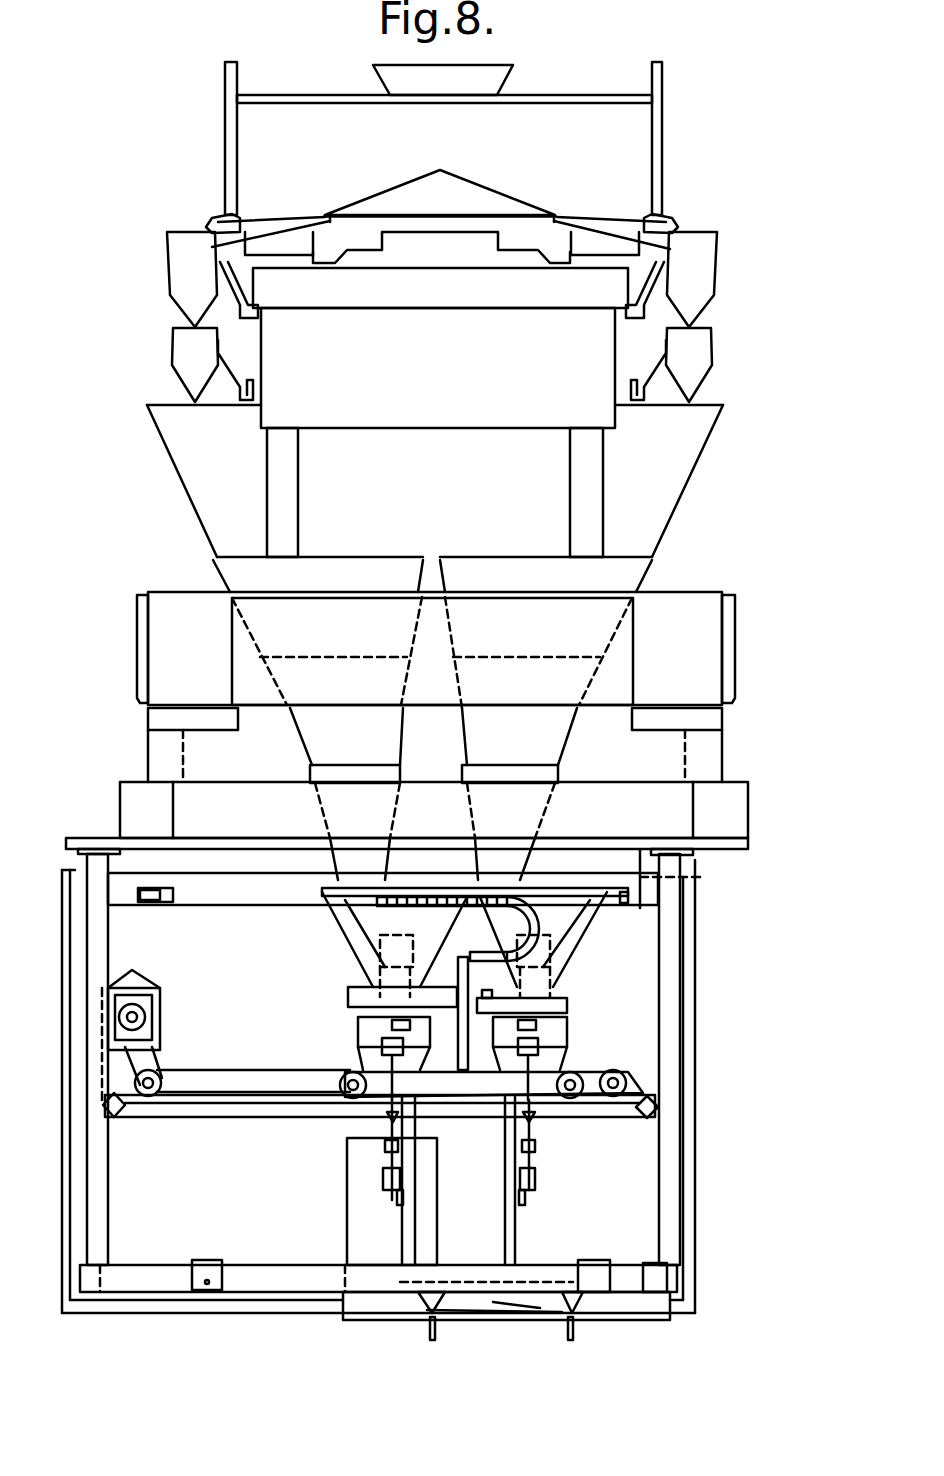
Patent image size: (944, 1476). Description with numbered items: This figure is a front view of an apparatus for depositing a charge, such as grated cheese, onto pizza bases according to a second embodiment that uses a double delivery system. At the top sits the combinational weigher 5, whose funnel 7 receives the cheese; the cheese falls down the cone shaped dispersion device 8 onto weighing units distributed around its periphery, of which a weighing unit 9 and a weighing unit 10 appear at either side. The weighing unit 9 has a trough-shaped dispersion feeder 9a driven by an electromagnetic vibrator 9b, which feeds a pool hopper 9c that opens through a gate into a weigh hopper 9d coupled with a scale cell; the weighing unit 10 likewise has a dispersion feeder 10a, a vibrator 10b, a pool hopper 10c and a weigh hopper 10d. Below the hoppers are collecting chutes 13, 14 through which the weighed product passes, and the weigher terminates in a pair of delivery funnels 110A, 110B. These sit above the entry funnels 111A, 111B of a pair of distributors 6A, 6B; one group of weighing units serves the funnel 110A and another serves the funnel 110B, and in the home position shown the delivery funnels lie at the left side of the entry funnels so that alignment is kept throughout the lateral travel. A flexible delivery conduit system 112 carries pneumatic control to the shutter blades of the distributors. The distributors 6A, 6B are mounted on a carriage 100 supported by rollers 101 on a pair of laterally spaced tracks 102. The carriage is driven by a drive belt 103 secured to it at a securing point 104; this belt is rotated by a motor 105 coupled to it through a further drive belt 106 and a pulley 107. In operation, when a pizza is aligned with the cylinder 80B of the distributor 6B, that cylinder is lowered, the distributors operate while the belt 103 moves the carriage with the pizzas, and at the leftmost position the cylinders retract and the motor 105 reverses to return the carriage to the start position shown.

The combinational weigher 5 is at (712, 139).
The funnel 7 is at (505, 90).
The cone shaped dispersion device 8 is at (482, 197).
The weighing unit 9 is at (207, 171).
The trough-shaped dispersion feeder 9a is at (222, 221).
The electromagnetic vibrator 9b is at (300, 247).
The pool hopper 9c is at (178, 272).
The weigh hopper 9d is at (185, 352).
The weighing unit 10 is at (735, 207).
The trough-shaped dispersion feeder 10a is at (675, 212).
The electromagnetic vibrator 10b is at (585, 247).
The pool hopper 10c is at (700, 272).
The weigh hopper 10d is at (695, 352).
The left collecting chute 13 is at (195, 490).
The right collecting chute 14 is at (685, 487).
The delivery funnel 110B is at (310, 768).
The delivery funnel 110A is at (558, 773).
The entry funnel 111B is at (337, 927).
The entry funnel 111A is at (586, 938).
The flexible delivery conduit system 112 is at (470, 975).
The distributor 6B is at (330, 1001).
The distributor 6A is at (580, 1010).
The carriage 100 is at (580, 1055).
The rollers 101 is at (343, 1088).
The tracks 102 is at (212, 1096).
The drive belt 103 is at (267, 1070).
The securing point 104 is at (477, 1100).
The motor 105 is at (157, 1013).
The drive belt 106 is at (160, 1055).
The pulley 107 is at (157, 1105).
The cylinder 80B is at (343, 1207).